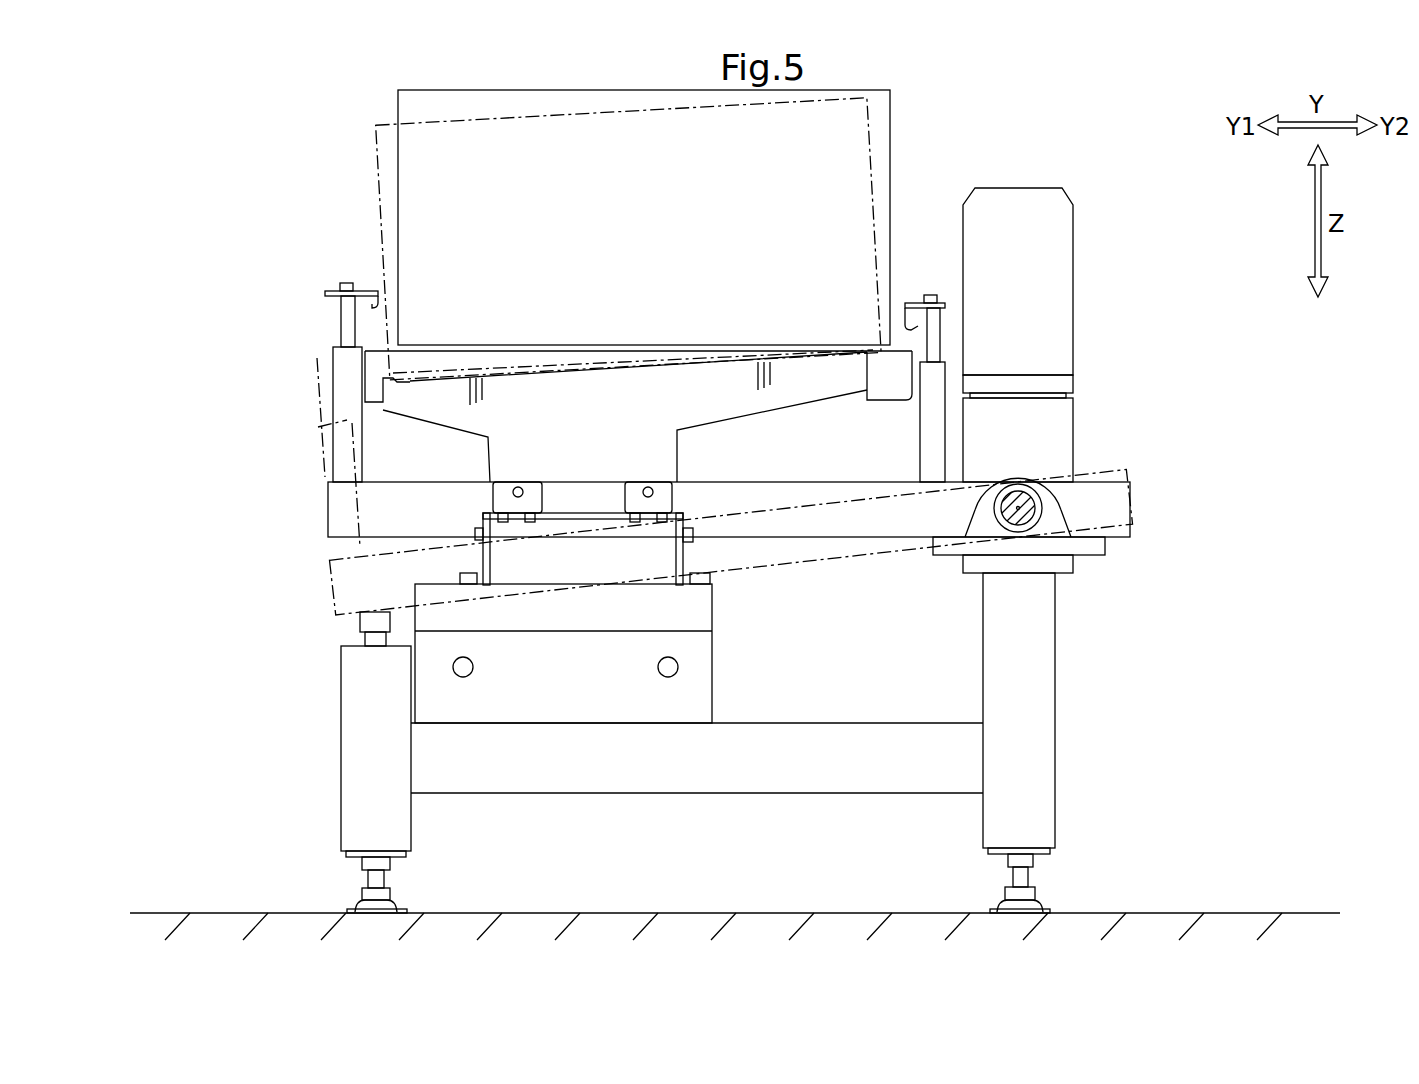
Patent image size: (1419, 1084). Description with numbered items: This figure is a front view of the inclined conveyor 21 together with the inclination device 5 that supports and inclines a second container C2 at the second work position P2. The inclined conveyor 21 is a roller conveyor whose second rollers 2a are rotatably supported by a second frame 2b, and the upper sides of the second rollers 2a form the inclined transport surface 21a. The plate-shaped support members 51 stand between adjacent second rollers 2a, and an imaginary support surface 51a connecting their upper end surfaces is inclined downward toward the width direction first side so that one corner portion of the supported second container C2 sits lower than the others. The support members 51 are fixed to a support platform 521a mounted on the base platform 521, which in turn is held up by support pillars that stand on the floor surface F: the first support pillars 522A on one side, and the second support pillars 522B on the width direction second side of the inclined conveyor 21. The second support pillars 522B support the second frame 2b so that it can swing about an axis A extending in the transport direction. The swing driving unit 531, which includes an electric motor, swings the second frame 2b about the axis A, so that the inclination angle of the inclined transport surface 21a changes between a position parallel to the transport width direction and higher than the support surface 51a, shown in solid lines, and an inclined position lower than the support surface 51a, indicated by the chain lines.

The second work position P2 is at (918, 127).
The second container C2 is at (413, 108).
The inclined conveyor 21 is at (628, 418).
The second roller 2a is at (373, 420).
The inclined transport surface 21a is at (447, 350).
The second frame 2b is at (373, 505).
The inclination device 5 is at (705, 550).
The support member 51 is at (723, 405).
The support surface 51a is at (585, 362).
The axis A is at (1020, 508).
The swing driving unit 531 is at (1053, 324).
The base platform 521 is at (697, 720).
The support platform 521a is at (697, 598).
The first support pillar 522A is at (360, 716).
The second support pillar 522B is at (1038, 643).
The floor surface F is at (1170, 912).